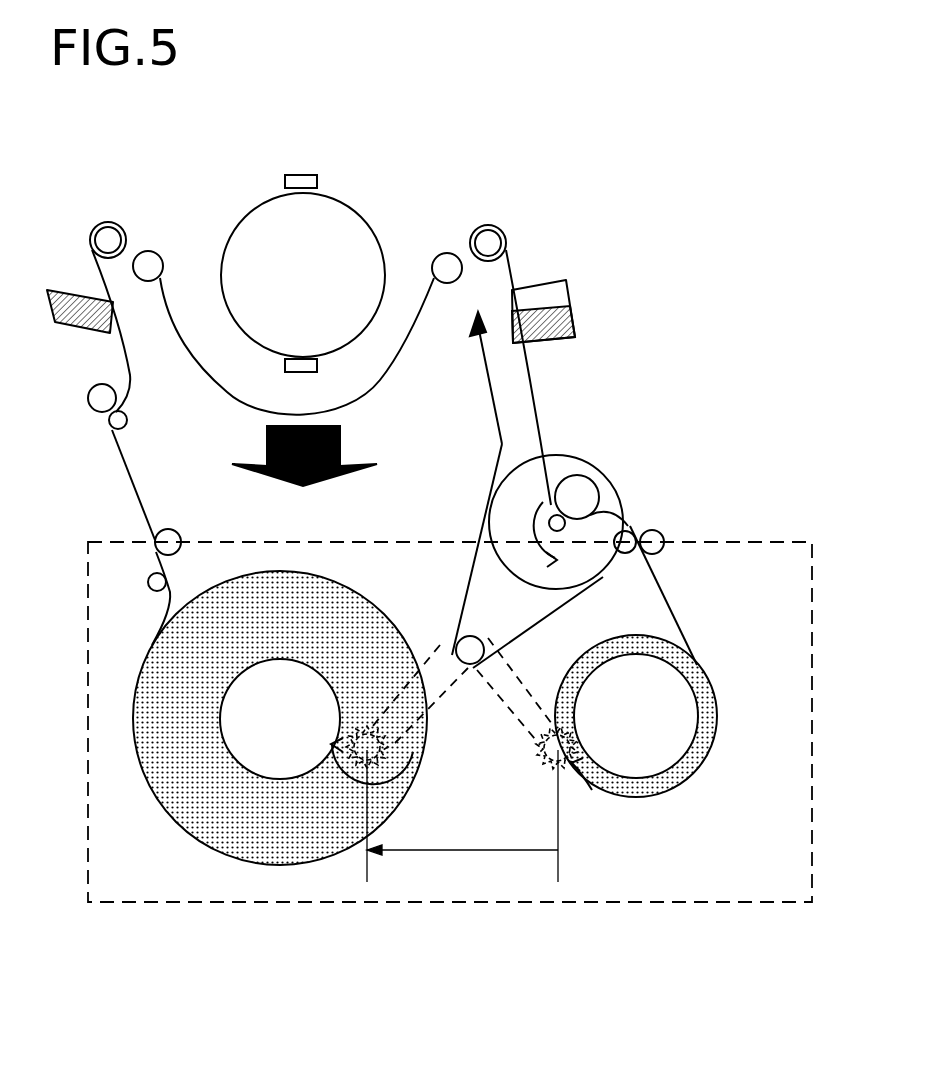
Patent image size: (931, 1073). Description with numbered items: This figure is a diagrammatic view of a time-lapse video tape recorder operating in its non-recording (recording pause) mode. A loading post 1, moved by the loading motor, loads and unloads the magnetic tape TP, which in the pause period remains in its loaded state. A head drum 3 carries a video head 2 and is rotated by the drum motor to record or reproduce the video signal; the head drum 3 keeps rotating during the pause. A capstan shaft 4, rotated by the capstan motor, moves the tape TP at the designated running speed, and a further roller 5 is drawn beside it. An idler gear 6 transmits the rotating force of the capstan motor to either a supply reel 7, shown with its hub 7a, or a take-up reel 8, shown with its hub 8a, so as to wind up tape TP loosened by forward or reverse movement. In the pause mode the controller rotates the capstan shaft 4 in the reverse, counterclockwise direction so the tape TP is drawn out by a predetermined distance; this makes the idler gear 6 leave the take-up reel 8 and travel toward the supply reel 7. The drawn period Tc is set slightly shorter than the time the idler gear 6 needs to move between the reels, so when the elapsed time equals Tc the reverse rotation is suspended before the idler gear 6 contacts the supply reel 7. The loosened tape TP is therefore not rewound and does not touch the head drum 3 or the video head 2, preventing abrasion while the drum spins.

The loading post 1 is at (110, 238).
The video head 2 is at (315, 174).
The head drum 3 is at (352, 250).
The capstan shaft 4 is at (560, 527).
The roller 5 is at (581, 493).
The idler gear 6 is at (344, 783).
The supply reel 7 is at (233, 858).
The fixing roller core 7a is at (243, 734).
The take-up reel 8 is at (667, 797).
The pressure roller core 8a is at (663, 735).
The magnetic tape TP is at (527, 417).
The predetermined period of time Tc is at (462, 819).